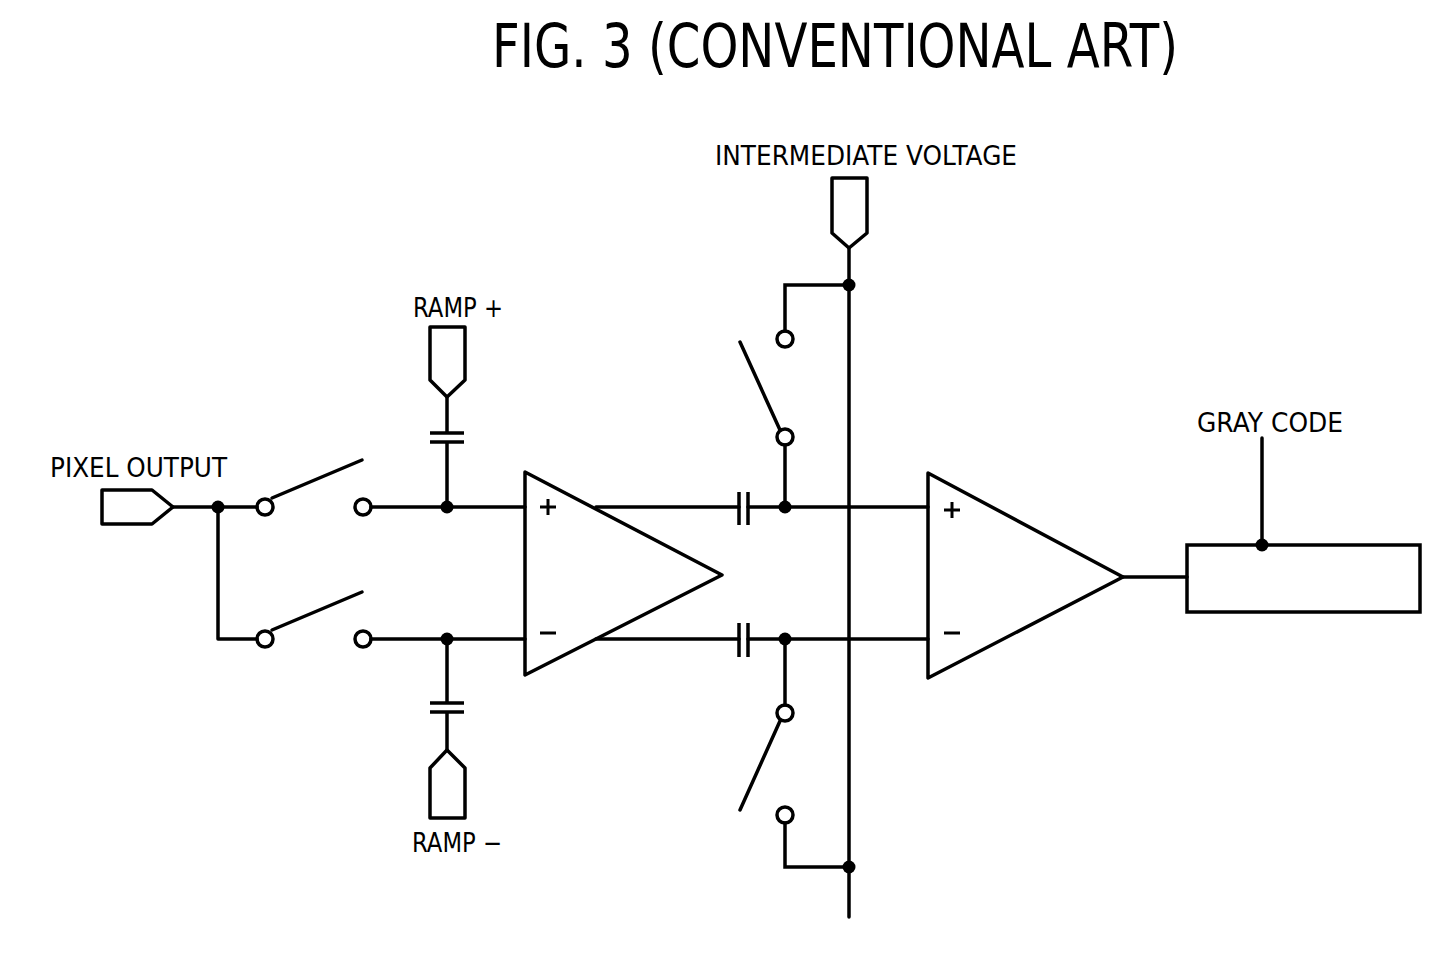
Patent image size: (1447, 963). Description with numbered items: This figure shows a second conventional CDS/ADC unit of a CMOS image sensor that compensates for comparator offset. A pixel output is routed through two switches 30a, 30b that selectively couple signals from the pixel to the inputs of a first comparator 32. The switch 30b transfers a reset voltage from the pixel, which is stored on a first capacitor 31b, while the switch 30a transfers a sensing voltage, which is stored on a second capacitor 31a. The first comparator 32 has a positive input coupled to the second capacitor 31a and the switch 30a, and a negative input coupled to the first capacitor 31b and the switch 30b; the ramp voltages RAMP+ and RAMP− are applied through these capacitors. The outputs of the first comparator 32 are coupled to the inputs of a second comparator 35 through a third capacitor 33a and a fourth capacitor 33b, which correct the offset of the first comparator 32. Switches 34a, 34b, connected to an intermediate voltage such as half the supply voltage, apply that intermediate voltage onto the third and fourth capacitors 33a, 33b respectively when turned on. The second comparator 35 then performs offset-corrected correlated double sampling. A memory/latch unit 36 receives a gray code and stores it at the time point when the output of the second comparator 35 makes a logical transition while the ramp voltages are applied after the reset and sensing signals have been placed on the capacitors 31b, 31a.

The switch 30a is at (312, 470).
The switch 30b is at (316, 612).
The second capacitor 31a is at (452, 433).
The first capacitor 31b is at (452, 712).
The first comparator 32 is at (623, 517).
The third capacitor 33a is at (737, 497).
The fourth capacitor 33b is at (728, 655).
The switch 34a is at (748, 360).
The switch 34b is at (752, 790).
The second comparator 35 is at (1028, 523).
The memory/latch unit 36 is at (1312, 545).